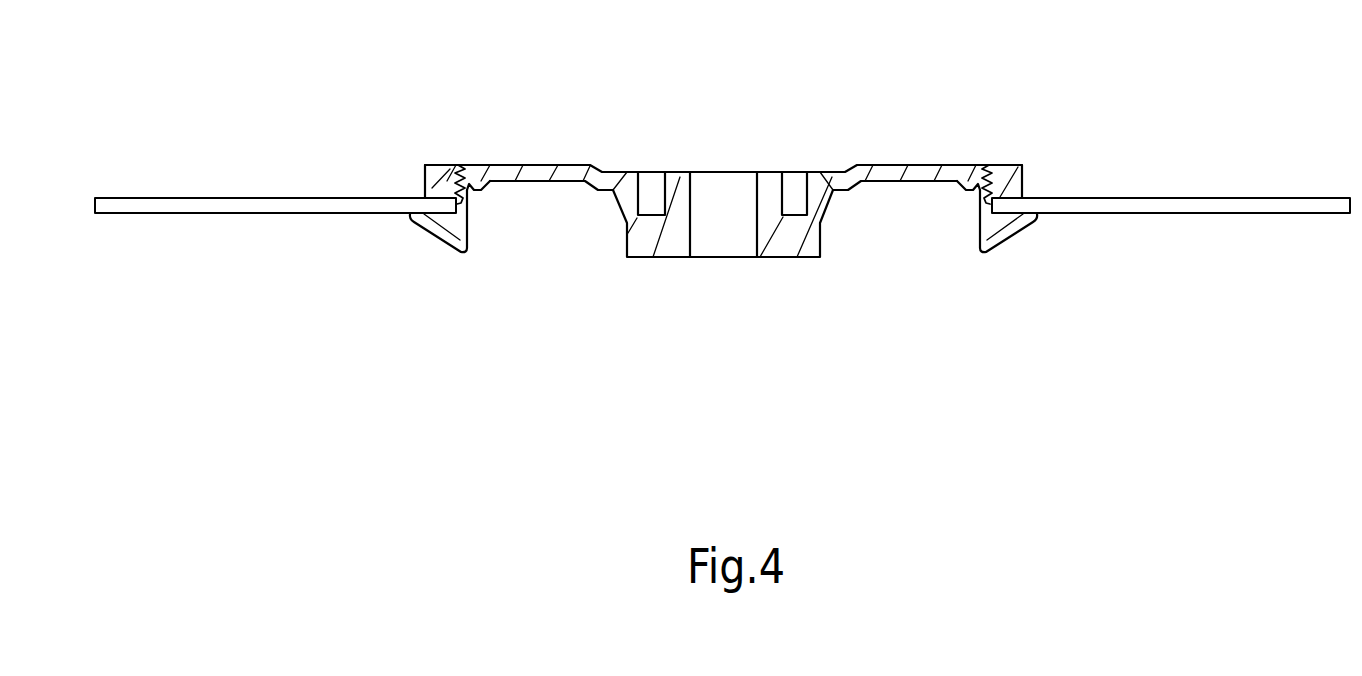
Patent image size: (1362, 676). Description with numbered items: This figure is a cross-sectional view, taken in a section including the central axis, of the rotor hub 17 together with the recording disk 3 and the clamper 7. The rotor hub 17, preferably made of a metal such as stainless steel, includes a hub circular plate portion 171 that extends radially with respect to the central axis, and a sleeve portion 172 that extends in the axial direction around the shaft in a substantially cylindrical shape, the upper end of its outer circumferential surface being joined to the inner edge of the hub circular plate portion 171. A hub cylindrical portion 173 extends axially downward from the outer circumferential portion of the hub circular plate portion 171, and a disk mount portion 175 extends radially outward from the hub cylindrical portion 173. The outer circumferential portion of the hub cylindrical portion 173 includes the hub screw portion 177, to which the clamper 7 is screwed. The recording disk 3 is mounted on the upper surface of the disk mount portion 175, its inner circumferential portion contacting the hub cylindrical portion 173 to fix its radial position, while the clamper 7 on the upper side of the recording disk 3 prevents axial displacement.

The recording disk 3 is at (1180, 203).
The clamper 7 is at (1008, 176).
The rotor hub 17 is at (687, 193).
The hub circular plate portion 171 is at (568, 173).
The sleeve portion 172 is at (812, 238).
The hub cylindrical portion 173 is at (468, 192).
The disk mount portion 175 is at (442, 223).
The hub screw portion 177 is at (450, 184).